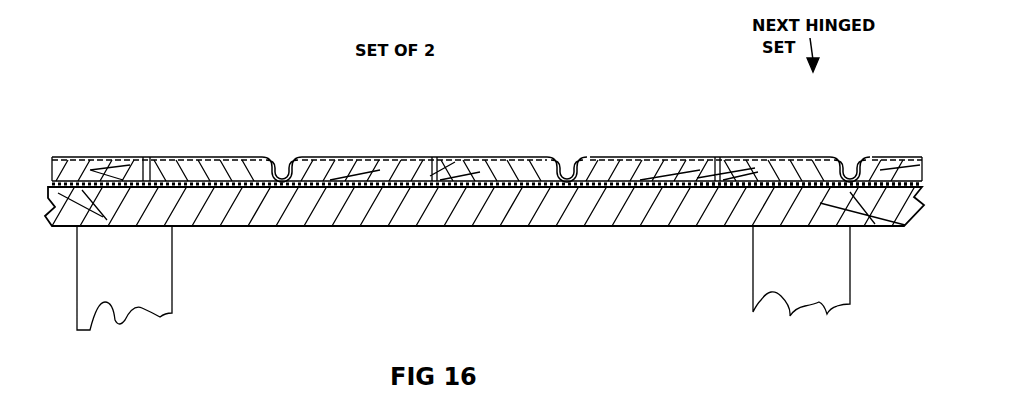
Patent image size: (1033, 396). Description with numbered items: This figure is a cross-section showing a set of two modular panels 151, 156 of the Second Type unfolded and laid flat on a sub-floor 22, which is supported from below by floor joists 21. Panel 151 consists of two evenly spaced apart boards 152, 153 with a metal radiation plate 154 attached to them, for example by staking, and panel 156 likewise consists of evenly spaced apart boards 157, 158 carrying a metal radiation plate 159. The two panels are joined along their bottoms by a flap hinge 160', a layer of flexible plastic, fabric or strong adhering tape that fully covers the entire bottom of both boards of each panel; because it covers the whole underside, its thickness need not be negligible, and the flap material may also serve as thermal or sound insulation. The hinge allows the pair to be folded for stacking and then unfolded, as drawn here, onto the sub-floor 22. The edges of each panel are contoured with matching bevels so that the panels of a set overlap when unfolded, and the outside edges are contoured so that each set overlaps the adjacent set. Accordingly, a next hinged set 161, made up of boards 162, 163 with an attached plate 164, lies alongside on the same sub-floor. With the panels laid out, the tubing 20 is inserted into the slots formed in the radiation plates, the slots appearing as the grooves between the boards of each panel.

The tubing 20 is at (281, 137).
The floor joists 21 is at (172, 290).
The sub-floor 22 is at (385, 227).
The panel 151 is at (314, 136).
The board 152 is at (215, 170).
The board 153 is at (360, 163).
The metal radiation plate 154 is at (178, 168).
The panel 156 is at (600, 130).
The board 157 is at (508, 166).
The board 158 is at (650, 160).
The metal radiation plate 159 is at (474, 160).
The flap hinge 160' is at (487, 232).
The hinged set of panels 161 is at (879, 130).
The board 162 is at (792, 172).
The board 163 is at (905, 160).
The plate 164 is at (737, 162).